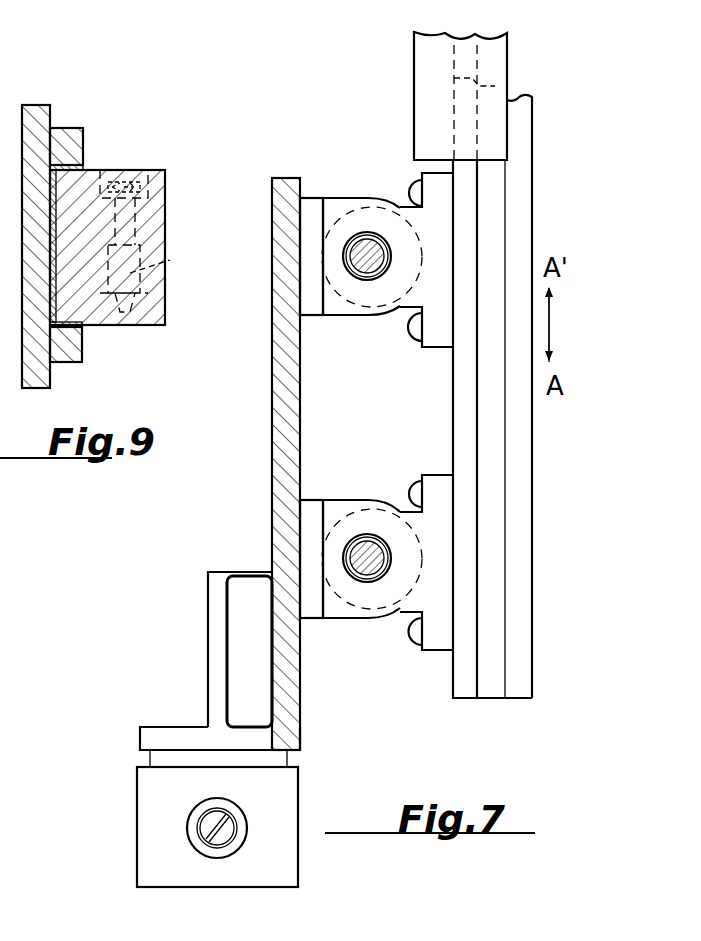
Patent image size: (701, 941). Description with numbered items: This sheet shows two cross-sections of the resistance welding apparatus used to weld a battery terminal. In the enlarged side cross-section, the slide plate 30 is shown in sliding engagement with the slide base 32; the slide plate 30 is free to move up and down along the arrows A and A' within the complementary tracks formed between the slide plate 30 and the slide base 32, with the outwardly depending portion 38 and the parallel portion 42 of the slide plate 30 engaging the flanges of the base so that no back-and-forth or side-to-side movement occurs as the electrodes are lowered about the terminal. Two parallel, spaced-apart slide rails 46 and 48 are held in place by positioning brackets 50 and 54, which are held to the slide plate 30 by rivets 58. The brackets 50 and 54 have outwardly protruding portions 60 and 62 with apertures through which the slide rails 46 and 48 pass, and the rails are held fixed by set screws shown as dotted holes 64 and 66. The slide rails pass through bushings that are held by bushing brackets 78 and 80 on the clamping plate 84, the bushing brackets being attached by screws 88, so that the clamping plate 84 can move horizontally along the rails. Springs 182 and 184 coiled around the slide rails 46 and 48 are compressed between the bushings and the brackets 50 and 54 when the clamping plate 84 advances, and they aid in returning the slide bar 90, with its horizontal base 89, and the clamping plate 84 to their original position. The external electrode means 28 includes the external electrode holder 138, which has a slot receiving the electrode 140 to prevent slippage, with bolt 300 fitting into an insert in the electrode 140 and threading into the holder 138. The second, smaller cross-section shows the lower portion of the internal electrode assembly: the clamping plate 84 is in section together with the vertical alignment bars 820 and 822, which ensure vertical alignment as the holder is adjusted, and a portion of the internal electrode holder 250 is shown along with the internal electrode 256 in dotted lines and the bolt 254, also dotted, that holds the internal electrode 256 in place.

In FIG. 7, the external electrode means 28 is at (128, 824).
In FIG. 7, the slide plate 30 is at (520, 112).
In FIG. 7, the slide base 32 is at (414, 78).
In FIG. 7, the portion of the slide plate 38 is at (467, 686).
In FIG. 7, the portion of the slide plate 42 is at (520, 686).
In FIG. 7, the slide rail 46 is at (370, 547).
In FIG. 7, the slide rail 48 is at (365, 236).
In FIG. 7, the positioning bracket 50 is at (440, 335).
In FIG. 7, the positioning bracket 54 is at (441, 643).
In FIG. 7, the rivets 58 is at (414, 188).
In FIG. 7, the outwardly protruding portion 60 is at (372, 296).
In FIG. 7, the outwardly protruding portion 62 is at (372, 609).
In FIG. 7, the set screw hole 64 is at (340, 615).
In FIG. 7, the set screw hole 66 is at (347, 200).
In FIG. 7, the bushing bracket 78 is at (300, 524).
In FIG. 7, the bushing bracket 80 is at (310, 207).
In FIG. 9, the clamping plate 84 is at (36, 125).
In FIG. 7, the clamping plate 84 is at (272, 426).
In FIG. 7, the screws 88 is at (333, 300).
In FIG. 7, the horizontal base 89 is at (160, 736).
In FIG. 7, the slide bar 90 is at (218, 657).
In FIG. 7, the external electrode holder 138 is at (158, 801).
In FIG. 7, the electrode 140 is at (242, 838).
In FIG. 7, the spring 182 is at (392, 562).
In FIG. 7, the spring 184 is at (393, 258).
In FIG. 9, the internal electrode holder 250 is at (150, 220).
In FIG. 9, the bolt 254 is at (128, 176).
In FIG. 9, the internal electrode 256 is at (168, 262).
In FIG. 7, the bolt 300 is at (232, 817).
In FIG. 9, the vertical alignment bar 820 is at (63, 142).
In FIG. 9, the vertical alignment bar 822 is at (70, 350).